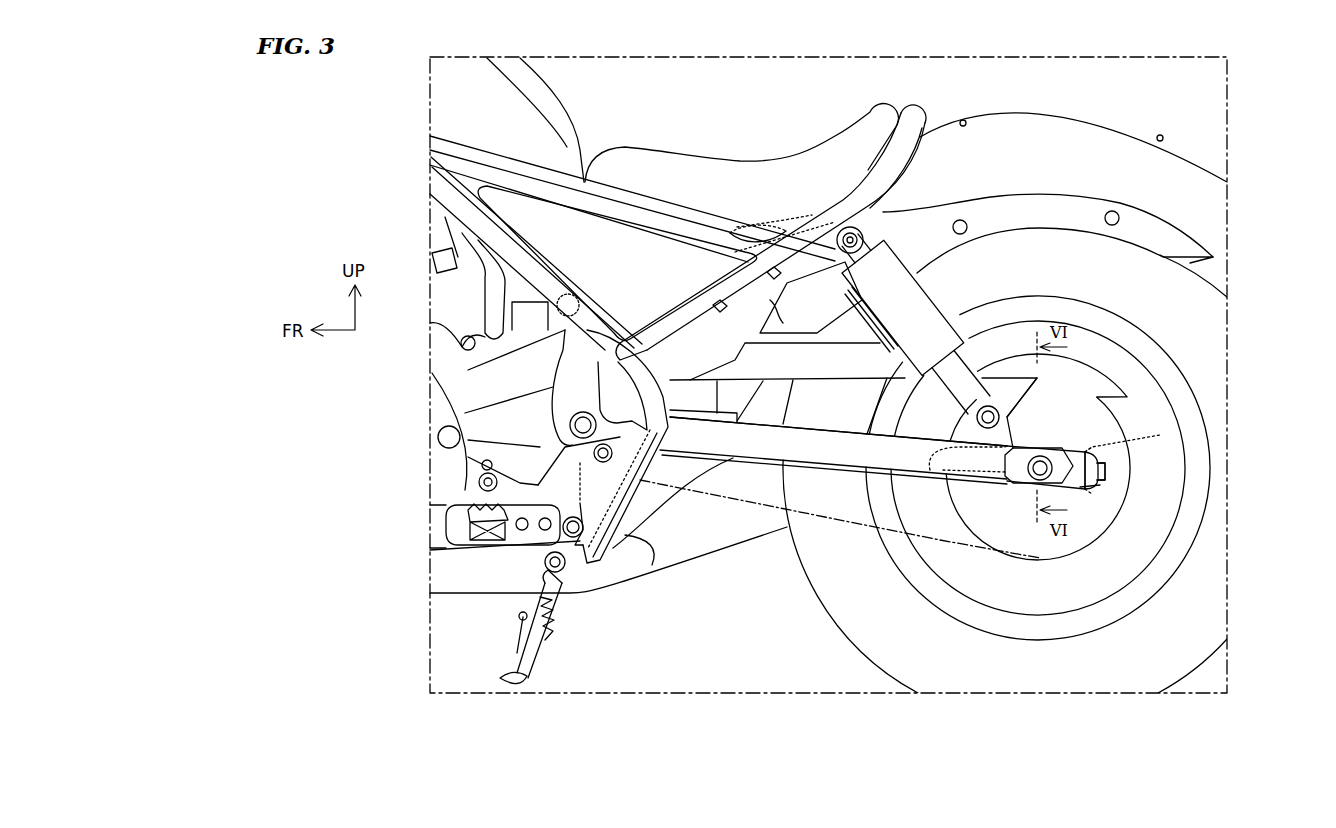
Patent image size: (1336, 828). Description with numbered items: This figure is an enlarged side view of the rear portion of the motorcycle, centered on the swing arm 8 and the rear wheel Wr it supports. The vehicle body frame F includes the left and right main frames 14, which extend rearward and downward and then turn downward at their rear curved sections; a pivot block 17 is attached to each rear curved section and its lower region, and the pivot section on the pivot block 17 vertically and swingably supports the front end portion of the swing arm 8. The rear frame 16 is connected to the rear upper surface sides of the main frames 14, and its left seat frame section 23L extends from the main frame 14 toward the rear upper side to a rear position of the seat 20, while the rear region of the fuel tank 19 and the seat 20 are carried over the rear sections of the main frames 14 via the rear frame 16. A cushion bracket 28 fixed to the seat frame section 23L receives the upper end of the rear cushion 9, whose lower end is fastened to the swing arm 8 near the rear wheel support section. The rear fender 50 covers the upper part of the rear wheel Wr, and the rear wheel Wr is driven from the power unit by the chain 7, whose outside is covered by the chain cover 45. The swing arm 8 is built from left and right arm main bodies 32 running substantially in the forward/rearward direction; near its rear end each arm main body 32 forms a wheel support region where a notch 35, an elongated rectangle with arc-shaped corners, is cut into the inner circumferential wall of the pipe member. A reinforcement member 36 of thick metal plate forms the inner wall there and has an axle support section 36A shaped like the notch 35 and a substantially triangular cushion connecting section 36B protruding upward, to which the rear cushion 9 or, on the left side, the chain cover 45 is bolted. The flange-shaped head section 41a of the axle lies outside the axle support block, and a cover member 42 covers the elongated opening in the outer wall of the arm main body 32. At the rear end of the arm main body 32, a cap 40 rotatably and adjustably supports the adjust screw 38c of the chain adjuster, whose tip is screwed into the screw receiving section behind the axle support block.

The vehicle body frame F is at (452, 162).
The main frame 14 is at (522, 260).
The fuel tank 19 is at (568, 140).
The seat 20 is at (713, 165).
The cushion bracket 28 is at (808, 236).
The left seat frame section 23L is at (832, 217).
The rear frame 16 is at (924, 118).
The rear fender 50 is at (1113, 137).
The rear cushion 9 is at (923, 307).
The chain cover 45 is at (1090, 373).
The rear wheel Wr is at (1200, 653).
The arm main body 32 is at (737, 447).
The swing arm 8 is at (772, 474).
The reinforcement member 36 is at (1167, 407).
The axle support section 36A is at (1090, 447).
The cushion connecting section 36B is at (1031, 437).
The adjust screw 38c is at (1107, 472).
The cap 40 is at (1093, 490).
The cover member 42 is at (1021, 472).
The head section 41a is at (1037, 472).
The notch 35 is at (1081, 489).
The chain 7 is at (838, 524).
The pivot block 17 is at (597, 503).